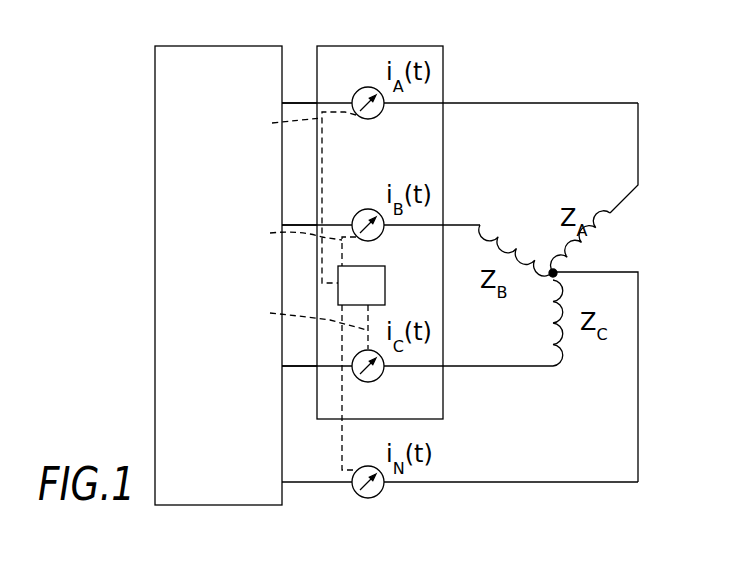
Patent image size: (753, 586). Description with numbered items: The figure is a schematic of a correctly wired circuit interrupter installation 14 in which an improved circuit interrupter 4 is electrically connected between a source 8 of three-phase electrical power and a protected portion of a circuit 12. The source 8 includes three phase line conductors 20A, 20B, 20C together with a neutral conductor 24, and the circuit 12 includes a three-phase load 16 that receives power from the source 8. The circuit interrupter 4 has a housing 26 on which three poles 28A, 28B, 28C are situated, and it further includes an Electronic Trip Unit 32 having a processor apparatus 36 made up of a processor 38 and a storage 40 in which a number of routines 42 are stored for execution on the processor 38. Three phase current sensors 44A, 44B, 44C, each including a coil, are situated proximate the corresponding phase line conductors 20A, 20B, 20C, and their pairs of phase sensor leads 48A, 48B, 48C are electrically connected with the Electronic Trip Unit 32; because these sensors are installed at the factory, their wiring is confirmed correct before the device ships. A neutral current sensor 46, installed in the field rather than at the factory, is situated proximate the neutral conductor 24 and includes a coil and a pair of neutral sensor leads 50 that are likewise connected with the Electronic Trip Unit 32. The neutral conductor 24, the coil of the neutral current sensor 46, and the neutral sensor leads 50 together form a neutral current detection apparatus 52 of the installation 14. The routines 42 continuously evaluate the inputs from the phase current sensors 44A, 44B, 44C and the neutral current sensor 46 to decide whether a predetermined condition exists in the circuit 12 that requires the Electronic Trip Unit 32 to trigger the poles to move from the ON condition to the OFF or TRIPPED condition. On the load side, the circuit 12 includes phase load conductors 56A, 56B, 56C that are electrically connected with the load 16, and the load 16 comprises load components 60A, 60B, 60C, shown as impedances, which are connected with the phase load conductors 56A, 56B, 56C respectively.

The circuit interrupter 4 is at (454, 50).
The source 8 is at (178, 46).
The circuit 12 is at (590, 103).
The circuit interrupter installation 14 is at (522, 65).
The load 16 is at (556, 276).
The phase line conductor 20A is at (292, 103).
The phase line conductor 20B is at (293, 223).
The phase line conductor 20C is at (294, 365).
The neutral conductor 24 is at (312, 483).
The housing 26 is at (447, 375).
The pole 28A is at (336, 100).
The pole 28B is at (333, 206).
The pole 28C is at (330, 374).
The Electronic Trip Unit 32 is at (372, 266).
The processor apparatus 36 is at (386, 277).
The processor 38 is at (386, 296).
The storage 40 is at (338, 272).
The routines 42 is at (338, 297).
The phase current sensor 44A is at (371, 87).
The phase current sensor 44B is at (368, 209).
The phase current sensor 44C is at (369, 383).
The neutral current sensor 46 is at (384, 488).
The phase sensor leads 48A is at (279, 129).
The phase sensor leads 48B is at (289, 241).
The phase sensor leads 48C is at (301, 309).
The neutral sensor leads 50 is at (340, 450).
The neutral current detection apparatus 52 is at (375, 498).
The phase load conductor 56A is at (458, 103).
The phase load conductor 56B is at (452, 225).
The phase load conductor 56C is at (512, 367).
The load component 60A is at (605, 250).
The load component 60B is at (508, 245).
The load component 60C is at (578, 352).